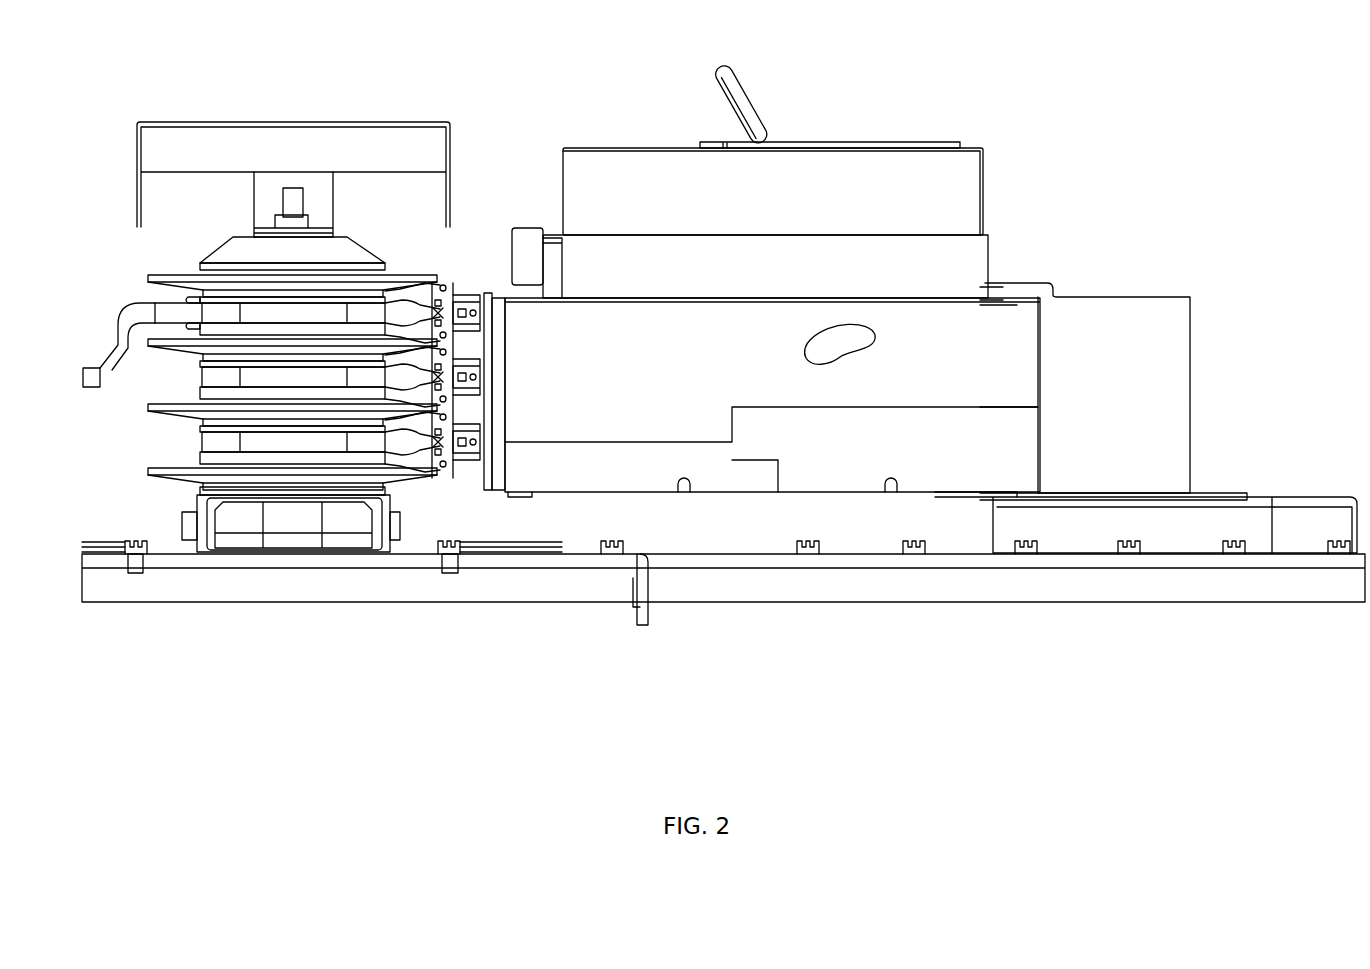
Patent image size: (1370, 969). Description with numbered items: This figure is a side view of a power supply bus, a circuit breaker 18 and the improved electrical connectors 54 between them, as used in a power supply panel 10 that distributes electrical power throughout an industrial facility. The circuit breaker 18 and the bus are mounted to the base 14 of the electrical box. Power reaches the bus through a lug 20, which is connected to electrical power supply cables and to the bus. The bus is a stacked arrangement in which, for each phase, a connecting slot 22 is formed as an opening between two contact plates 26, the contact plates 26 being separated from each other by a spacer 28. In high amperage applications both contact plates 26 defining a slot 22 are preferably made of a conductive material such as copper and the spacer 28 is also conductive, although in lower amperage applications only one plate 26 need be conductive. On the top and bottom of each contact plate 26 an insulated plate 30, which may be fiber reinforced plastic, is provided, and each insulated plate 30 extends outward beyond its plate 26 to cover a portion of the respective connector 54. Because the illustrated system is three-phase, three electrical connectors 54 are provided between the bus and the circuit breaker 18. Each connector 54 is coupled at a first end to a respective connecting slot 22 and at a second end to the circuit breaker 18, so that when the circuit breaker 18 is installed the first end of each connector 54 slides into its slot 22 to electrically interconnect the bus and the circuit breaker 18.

The power supply panel 10 is at (708, 602).
The mounting structure 14 is at (1276, 494).
The circuit breaker 18 is at (892, 142).
The lug 20 is at (128, 318).
The connecting slot 22 is at (216, 444).
The contact plate 26 is at (200, 296).
The spacer 28 is at (300, 447).
The insulated plate 30 is at (182, 275).
The electrical connector 54 is at (458, 292).